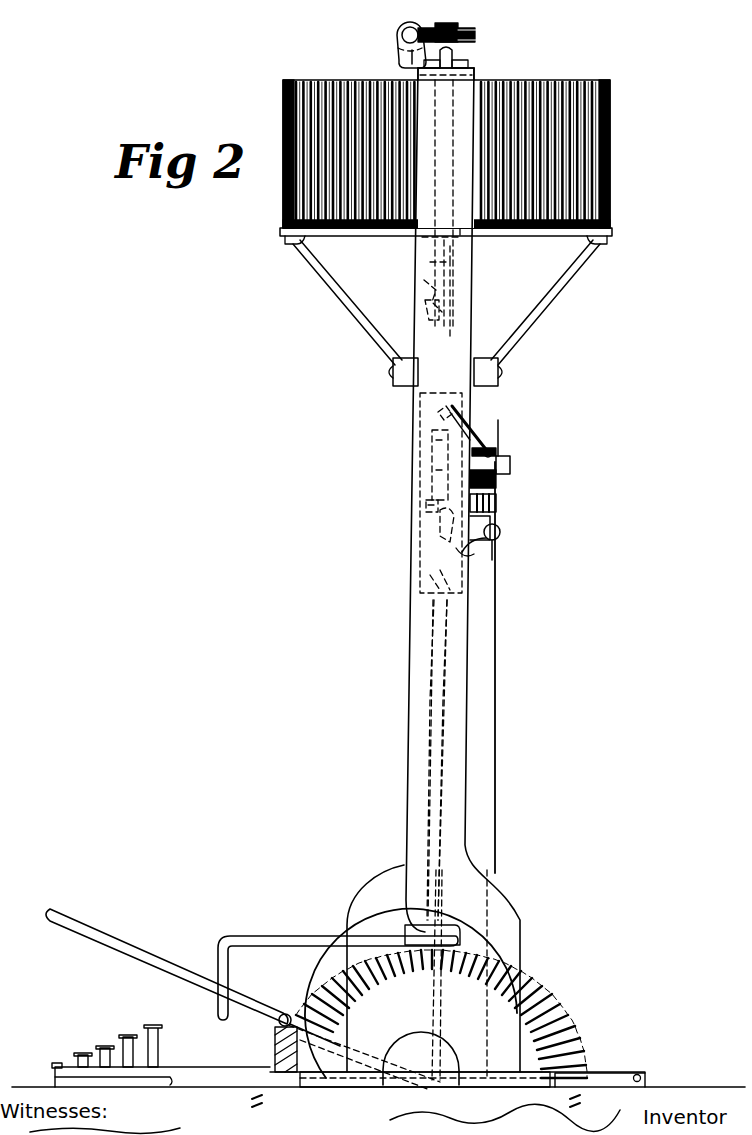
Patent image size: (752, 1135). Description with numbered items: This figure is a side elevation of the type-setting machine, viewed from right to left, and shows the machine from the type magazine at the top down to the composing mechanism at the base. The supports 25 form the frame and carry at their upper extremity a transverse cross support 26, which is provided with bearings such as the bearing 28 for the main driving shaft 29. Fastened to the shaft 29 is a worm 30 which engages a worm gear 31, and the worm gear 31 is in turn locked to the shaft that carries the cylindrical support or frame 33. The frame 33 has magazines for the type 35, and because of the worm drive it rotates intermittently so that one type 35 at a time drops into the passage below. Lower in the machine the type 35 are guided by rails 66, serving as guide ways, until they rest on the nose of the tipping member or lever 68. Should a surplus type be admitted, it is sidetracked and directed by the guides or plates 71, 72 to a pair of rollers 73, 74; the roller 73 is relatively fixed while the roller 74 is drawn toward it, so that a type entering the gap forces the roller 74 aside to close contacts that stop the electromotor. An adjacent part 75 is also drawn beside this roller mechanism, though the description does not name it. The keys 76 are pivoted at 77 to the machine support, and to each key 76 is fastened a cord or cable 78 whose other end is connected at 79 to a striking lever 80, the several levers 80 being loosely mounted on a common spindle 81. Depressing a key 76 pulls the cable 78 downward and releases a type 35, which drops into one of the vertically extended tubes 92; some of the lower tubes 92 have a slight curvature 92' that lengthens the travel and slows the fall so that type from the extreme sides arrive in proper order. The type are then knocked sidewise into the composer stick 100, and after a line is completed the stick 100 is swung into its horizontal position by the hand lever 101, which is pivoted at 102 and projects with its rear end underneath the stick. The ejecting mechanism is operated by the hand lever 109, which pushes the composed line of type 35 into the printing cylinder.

The supports 25 is at (467, 172).
The transverse cross support 26 is at (456, 70).
The bearing 28 is at (410, 56).
The main driving shaft 29 is at (396, 46).
The worm 30 is at (402, 30).
The worm gear 31 is at (476, 38).
The cylindrical support or frame 33 is at (565, 84).
The type 35 is at (436, 425).
The rails 66 is at (438, 457).
The tipping member or lever 68 is at (445, 516).
The guide or plate 71 is at (468, 443).
The guide or plate 72 is at (490, 450).
The roller 73 is at (496, 485).
The roller 74 is at (498, 443).
The plate 75 is at (510, 461).
The keys 76 is at (153, 1028).
The pivot 77 is at (641, 1076).
The cord or cable 78 is at (496, 780).
The connection point 79 is at (500, 528).
The striking lever 80 is at (472, 562).
The common spindle 81 is at (498, 546).
The vertically extended tubes 92 is at (396, 760).
The curvature 92' is at (493, 760).
The composer stick 100 is at (437, 1047).
The hand lever 101 is at (132, 930).
The pivot 102 is at (287, 1013).
The hand lever 109 is at (270, 934).